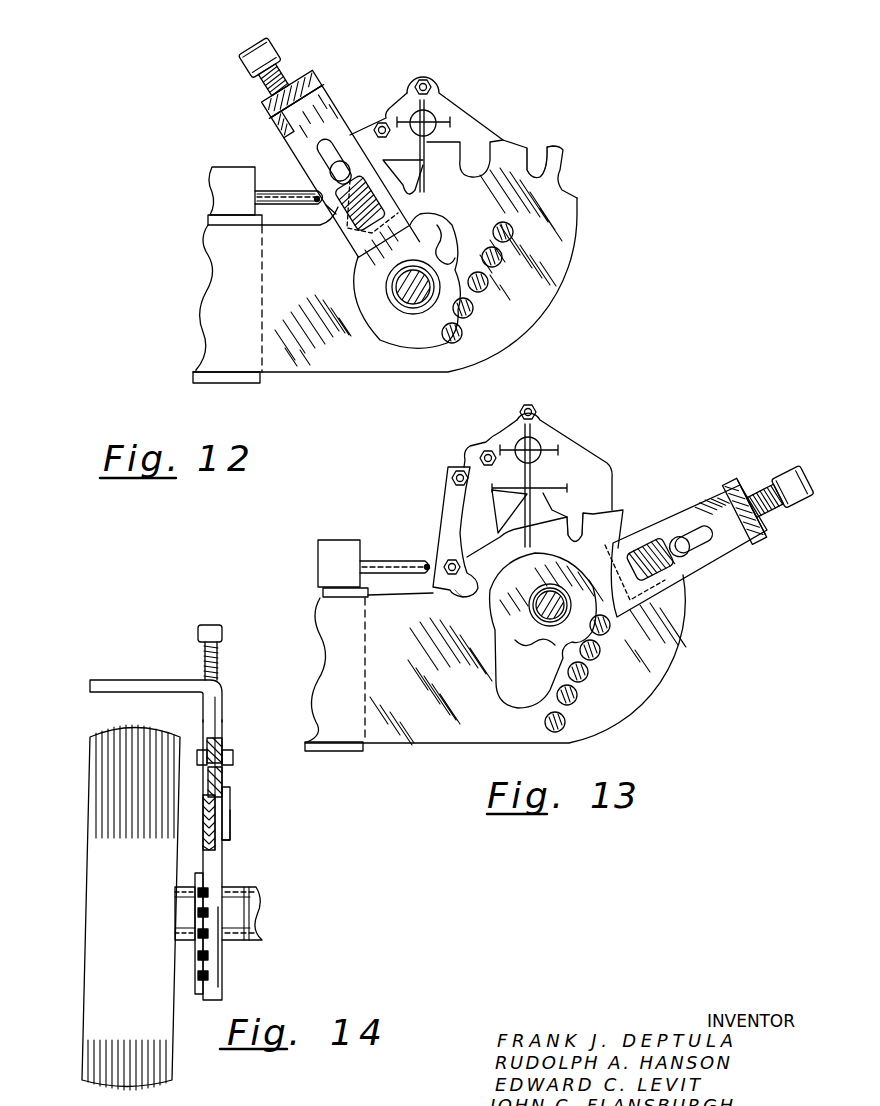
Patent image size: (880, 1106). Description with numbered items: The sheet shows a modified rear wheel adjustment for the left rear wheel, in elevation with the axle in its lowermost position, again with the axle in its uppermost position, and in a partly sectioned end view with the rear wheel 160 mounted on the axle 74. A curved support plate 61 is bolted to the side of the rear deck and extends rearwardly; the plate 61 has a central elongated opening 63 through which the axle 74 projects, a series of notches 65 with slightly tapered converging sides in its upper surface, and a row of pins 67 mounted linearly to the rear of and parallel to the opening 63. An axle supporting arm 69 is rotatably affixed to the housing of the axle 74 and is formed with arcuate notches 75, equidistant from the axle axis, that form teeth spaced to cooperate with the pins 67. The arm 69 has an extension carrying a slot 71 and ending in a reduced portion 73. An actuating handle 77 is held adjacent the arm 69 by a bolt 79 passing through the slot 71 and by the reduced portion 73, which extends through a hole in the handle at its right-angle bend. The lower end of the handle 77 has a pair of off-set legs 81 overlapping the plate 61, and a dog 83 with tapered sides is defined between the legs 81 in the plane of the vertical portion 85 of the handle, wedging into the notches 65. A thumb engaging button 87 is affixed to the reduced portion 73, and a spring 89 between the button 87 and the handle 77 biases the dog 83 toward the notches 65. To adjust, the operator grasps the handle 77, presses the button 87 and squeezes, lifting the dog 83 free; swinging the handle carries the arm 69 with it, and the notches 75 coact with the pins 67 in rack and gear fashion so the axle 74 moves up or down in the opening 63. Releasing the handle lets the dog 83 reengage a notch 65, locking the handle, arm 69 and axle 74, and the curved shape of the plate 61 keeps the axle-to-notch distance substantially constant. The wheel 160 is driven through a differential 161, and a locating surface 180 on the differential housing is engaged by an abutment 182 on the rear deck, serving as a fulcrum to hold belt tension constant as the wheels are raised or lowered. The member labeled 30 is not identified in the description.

In FIG. 12, the support post 30 is at (226, 384).
In FIG. 13, the support post 30 is at (340, 751).
In FIG. 12, the support plate 61 is at (366, 373).
In FIG. 13, the support plate 61 is at (392, 744).
In FIG. 14, the support plate 61 is at (223, 872).
In FIG. 12, the elongated opening 63 is at (408, 262).
In FIG. 13, the elongated opening 63 is at (539, 643).
In FIG. 12, the notches 65 is at (547, 172).
In FIG. 13, the notches 65 is at (576, 520).
In FIG. 14, the notches 65 is at (231, 827).
In FIG. 12, the pins 67 is at (468, 319).
In FIG. 13, the pins 67 is at (596, 657).
In FIG. 14, the pins 67 is at (197, 955).
In FIG. 12, the axle supporting arm 69 is at (325, 192).
In FIG. 13, the axle supporting arm 69 is at (695, 565).
In FIG. 14, the axle supporting arm 69 is at (205, 806).
In FIG. 12, the slot 71 is at (312, 151).
In FIG. 13, the slot 71 is at (696, 513).
In FIG. 14, the slot 71 is at (206, 785).
In FIG. 12, the reduced portion 73 is at (285, 123).
In FIG. 13, the reduced portion 73 is at (747, 530).
In FIG. 12, the axle 74 is at (405, 303).
In FIG. 13, the axle 74 is at (533, 586).
In FIG. 12, the arcuate notches 75 is at (439, 244).
In FIG. 13, the arcuate notches 75 is at (535, 661).
In FIG. 12, the actuating handle 77 is at (307, 90).
In FIG. 13, the actuating handle 77 is at (749, 493).
In FIG. 14, the actuating handle 77 is at (133, 680).
In FIG. 12, the bolt 79 is at (365, 157).
In FIG. 13, the bolt 79 is at (664, 526).
In FIG. 14, the bolt 79 is at (233, 755).
In FIG. 12, the off-set legs 81 is at (347, 234).
In FIG. 13, the off-set legs 81 is at (617, 544).
In FIG. 14, the off-set legs 81 is at (231, 805).
In FIG. 12, the dog 83 is at (360, 203).
In FIG. 13, the dog 83 is at (650, 558).
In FIG. 14, the dog 83 is at (224, 788).
In FIG. 14, the vertical portion 85 is at (224, 735).
In FIG. 12, the thumb engaging button 87 is at (242, 47).
In FIG. 13, the thumb engaging button 87 is at (798, 461).
In FIG. 14, the thumb engaging button 87 is at (224, 633).
In FIG. 12, the spring 89 is at (249, 86).
In FIG. 13, the spring 89 is at (781, 514).
In FIG. 14, the spring 89 is at (221, 658).
In FIG. 14, the rear wheel 160 is at (90, 994).
In FIG. 12, the differential 161 is at (468, 118).
In FIG. 13, the differential 161 is at (580, 449).
In FIG. 12, the locating surface 180 is at (327, 213).
In FIG. 13, the locating surface 180 is at (441, 540).
In FIG. 12, the abutment 182 is at (277, 191).
In FIG. 13, the abutment 182 is at (390, 566).